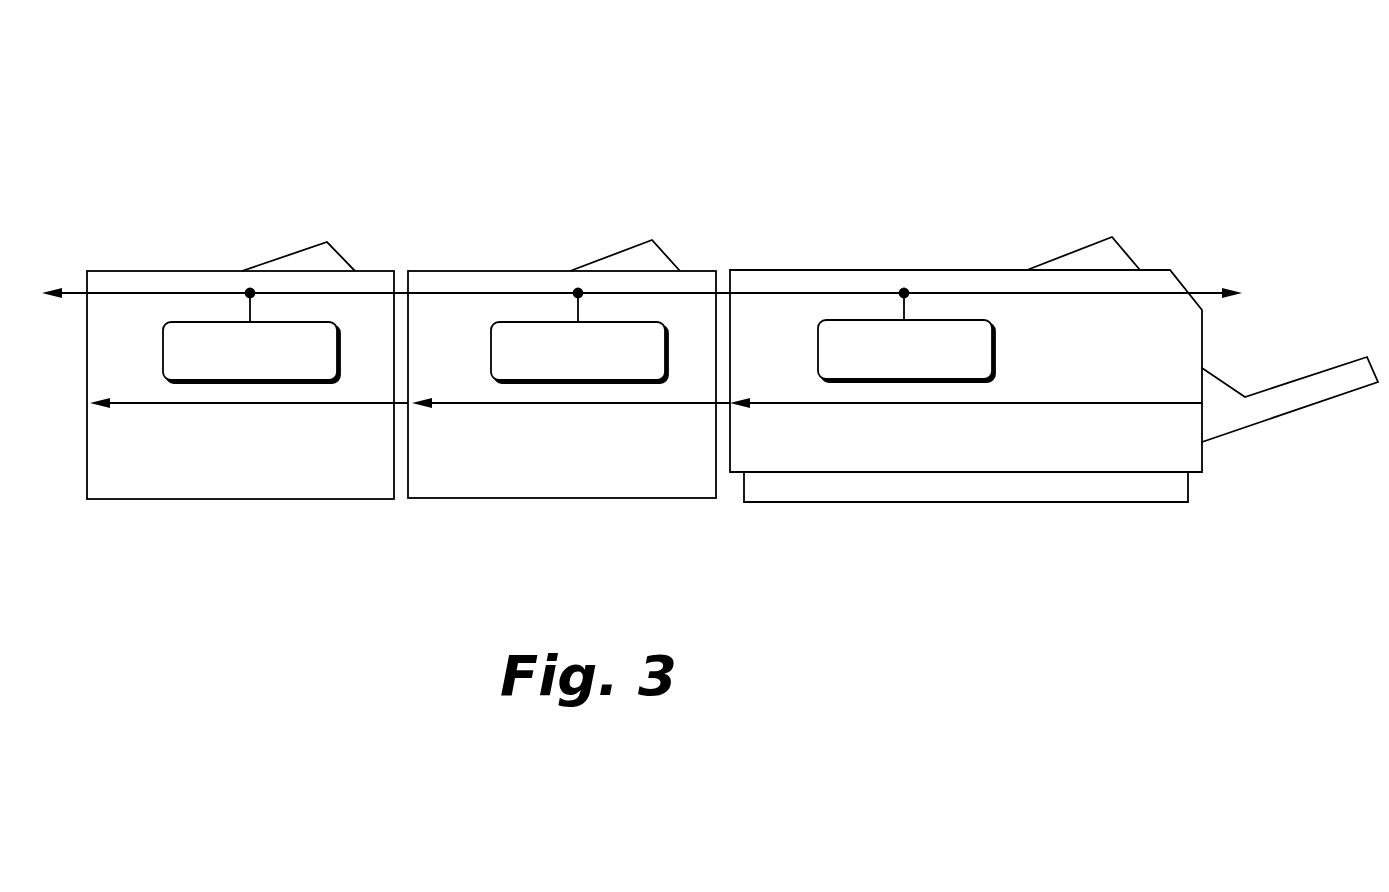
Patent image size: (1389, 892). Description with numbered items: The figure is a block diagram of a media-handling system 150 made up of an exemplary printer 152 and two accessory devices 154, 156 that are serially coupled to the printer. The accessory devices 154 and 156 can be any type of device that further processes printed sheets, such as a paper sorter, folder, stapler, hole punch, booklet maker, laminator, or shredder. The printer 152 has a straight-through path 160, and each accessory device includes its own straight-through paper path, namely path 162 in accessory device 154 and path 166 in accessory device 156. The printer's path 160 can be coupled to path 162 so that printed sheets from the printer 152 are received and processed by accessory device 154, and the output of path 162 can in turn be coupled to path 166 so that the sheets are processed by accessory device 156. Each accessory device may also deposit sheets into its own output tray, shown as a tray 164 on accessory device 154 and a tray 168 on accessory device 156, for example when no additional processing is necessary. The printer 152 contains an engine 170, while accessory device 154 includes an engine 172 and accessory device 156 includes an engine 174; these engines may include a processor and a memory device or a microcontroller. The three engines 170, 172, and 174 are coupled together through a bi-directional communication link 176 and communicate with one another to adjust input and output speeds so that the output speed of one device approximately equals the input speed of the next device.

The media-handling system 150 is at (488, 84).
The printer 152 is at (817, 268).
The accessory device 154 is at (490, 270).
The accessory device 156 is at (163, 270).
The straight-through path 160 is at (787, 405).
The straight-through paper path 162 is at (598, 405).
The output tray 164 is at (625, 252).
The straight-through paper path 166 is at (265, 405).
The output tray 168 is at (297, 252).
The engine 170 is at (976, 363).
The engine 172 is at (647, 363).
The engine 174 is at (319, 363).
The bi-directional communication link 176 is at (990, 289).